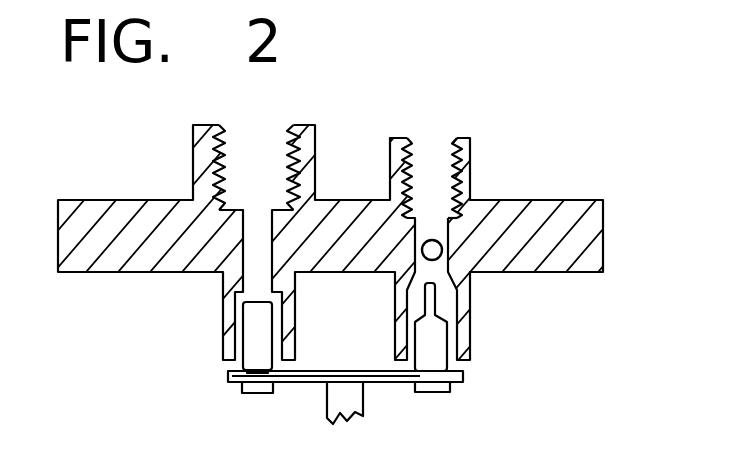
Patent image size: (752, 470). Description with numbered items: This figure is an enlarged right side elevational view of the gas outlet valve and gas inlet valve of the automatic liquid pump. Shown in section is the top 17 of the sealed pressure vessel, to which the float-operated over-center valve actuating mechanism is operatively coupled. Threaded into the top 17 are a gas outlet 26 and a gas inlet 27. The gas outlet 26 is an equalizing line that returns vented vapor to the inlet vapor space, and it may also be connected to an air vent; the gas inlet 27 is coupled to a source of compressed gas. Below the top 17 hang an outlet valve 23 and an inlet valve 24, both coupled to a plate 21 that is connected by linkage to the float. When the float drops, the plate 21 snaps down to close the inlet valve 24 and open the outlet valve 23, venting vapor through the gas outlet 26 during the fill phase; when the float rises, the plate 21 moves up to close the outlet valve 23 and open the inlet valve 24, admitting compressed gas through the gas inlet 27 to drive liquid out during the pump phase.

The top 17 is at (545, 210).
The gas outlet 26 is at (240, 155).
The gas inlet 27 is at (432, 153).
The outlet valve 23 is at (257, 335).
The inlet valve 24 is at (438, 343).
The plate 21 is at (392, 383).